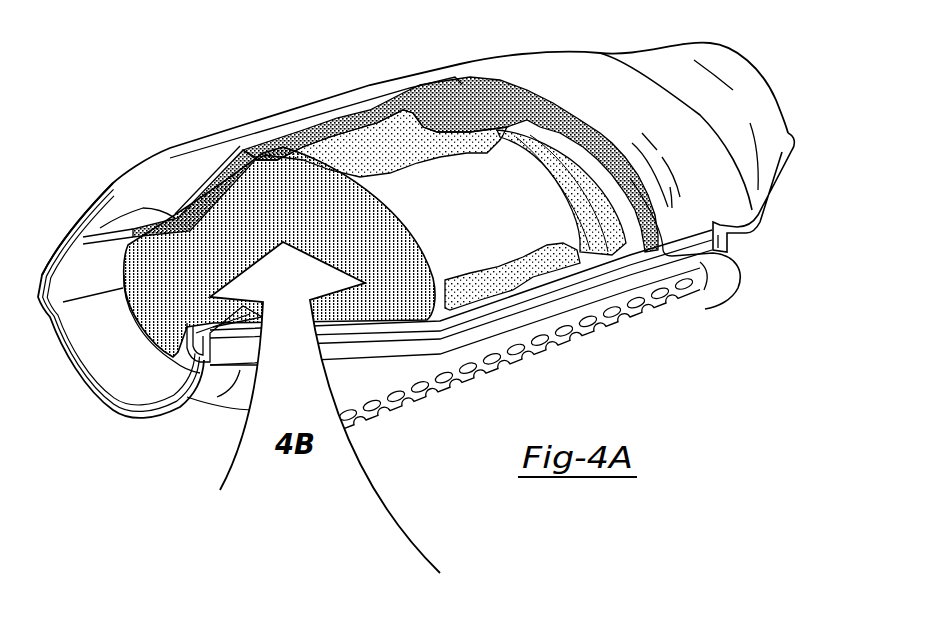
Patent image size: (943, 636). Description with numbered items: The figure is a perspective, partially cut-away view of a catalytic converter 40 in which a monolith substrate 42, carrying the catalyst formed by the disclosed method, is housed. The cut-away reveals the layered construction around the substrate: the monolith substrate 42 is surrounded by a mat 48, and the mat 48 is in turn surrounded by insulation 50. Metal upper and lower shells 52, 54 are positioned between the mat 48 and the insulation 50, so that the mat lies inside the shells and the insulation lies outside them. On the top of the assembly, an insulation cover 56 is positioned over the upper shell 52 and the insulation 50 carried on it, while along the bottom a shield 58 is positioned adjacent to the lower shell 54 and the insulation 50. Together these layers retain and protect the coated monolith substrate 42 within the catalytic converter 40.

The catalytic converter 40 is at (124, 108).
The monolith substrate 42 is at (493, 247).
The mat 48 is at (356, 172).
The insulation 50 is at (447, 92).
The upper shell 52 is at (630, 240).
The lower shell 54 is at (390, 373).
The insulation cover 56 is at (533, 70).
The shield 58 is at (618, 322).